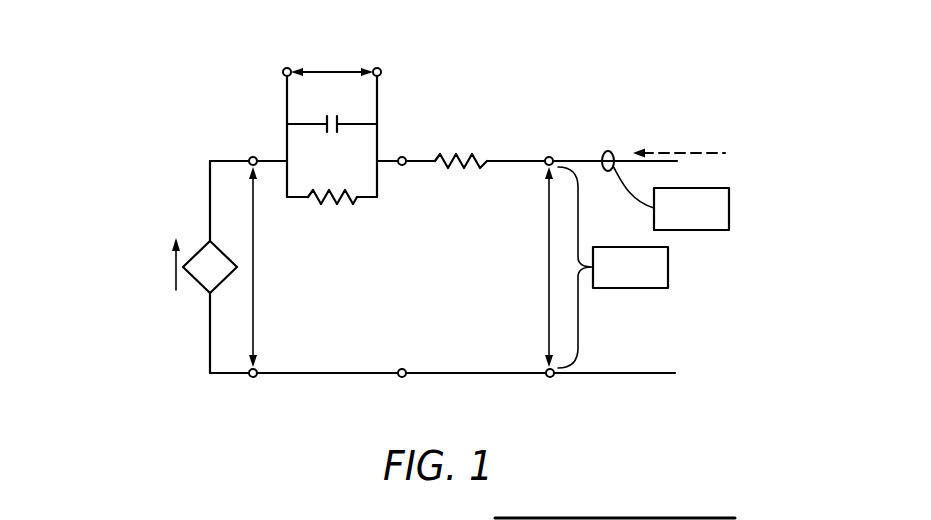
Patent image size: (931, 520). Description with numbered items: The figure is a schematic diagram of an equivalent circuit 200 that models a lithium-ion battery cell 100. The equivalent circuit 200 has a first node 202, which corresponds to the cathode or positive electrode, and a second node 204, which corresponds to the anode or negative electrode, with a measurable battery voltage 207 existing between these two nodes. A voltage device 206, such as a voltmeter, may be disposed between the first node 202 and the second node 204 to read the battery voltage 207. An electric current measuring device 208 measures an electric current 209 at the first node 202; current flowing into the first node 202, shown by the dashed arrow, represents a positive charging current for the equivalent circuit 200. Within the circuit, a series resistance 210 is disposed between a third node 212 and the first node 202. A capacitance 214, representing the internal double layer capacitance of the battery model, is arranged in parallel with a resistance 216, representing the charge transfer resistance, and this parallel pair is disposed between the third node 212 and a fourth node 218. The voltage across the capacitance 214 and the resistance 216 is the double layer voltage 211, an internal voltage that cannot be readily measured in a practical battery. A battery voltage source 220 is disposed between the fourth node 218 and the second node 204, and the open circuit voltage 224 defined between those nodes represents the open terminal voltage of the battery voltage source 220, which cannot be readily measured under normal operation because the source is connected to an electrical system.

The lithium-ion battery cell 100 is at (727, 112).
The equivalent circuit 200 is at (622, 77).
The first node 202 is at (553, 157).
The second node 204 is at (555, 377).
The voltage device 206 is at (648, 279).
The battery voltage 207 is at (547, 258).
The electric current measuring device 208 is at (709, 221).
The electric current 209 is at (615, 156).
The series resistance 210 is at (472, 155).
The double layer voltage 211 is at (318, 70).
The third node 212 is at (403, 157).
The capacitance 214 is at (326, 122).
The resistance 216 is at (352, 200).
The fourth node 218 is at (253, 157).
The battery voltage source 220 is at (193, 250).
The open circuit voltage 224 is at (257, 282).